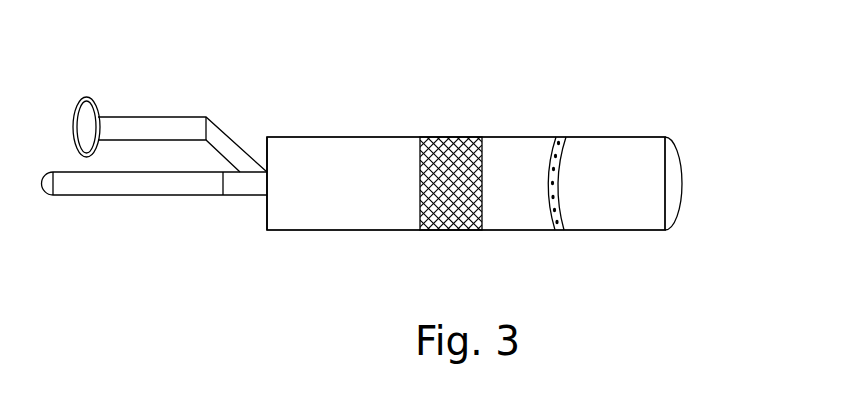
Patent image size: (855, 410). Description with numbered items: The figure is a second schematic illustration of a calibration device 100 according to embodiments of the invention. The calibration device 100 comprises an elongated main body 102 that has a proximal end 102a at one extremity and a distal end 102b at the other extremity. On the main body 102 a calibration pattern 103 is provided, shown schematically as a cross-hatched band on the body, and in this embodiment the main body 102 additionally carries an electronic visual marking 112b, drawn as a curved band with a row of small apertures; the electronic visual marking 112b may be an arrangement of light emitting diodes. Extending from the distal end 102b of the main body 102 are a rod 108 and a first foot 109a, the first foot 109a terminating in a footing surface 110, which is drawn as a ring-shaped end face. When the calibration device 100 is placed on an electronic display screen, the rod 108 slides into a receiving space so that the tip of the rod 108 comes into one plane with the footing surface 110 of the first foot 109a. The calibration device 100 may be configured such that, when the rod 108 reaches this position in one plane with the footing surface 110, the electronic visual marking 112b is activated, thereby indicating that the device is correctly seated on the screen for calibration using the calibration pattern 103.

The calibration device 100 is at (669, 131).
The main body 102 is at (297, 137).
The proximal end 102a is at (677, 222).
The distal end 102b is at (263, 219).
The calibration pattern 103 is at (447, 150).
The rod 108 is at (82, 190).
The first foot 109a is at (153, 127).
The footing surface 110 is at (85, 95).
The electronic visual marking 112b is at (562, 135).